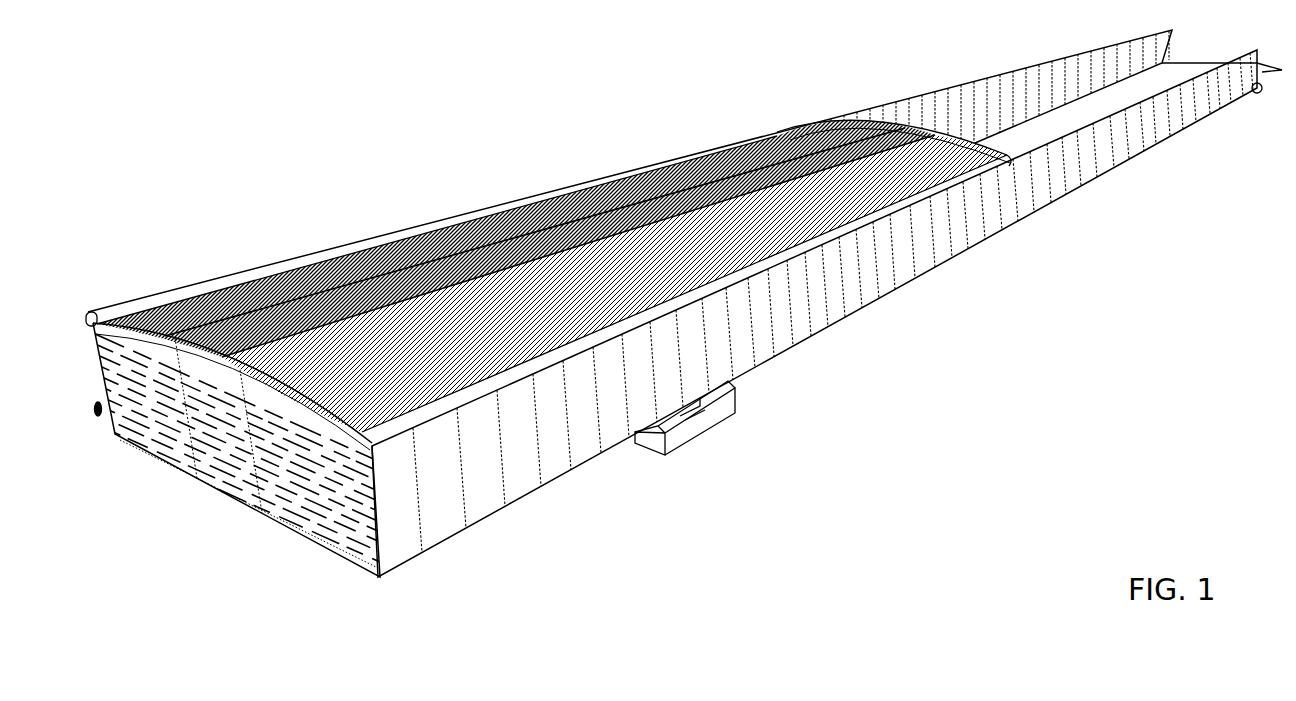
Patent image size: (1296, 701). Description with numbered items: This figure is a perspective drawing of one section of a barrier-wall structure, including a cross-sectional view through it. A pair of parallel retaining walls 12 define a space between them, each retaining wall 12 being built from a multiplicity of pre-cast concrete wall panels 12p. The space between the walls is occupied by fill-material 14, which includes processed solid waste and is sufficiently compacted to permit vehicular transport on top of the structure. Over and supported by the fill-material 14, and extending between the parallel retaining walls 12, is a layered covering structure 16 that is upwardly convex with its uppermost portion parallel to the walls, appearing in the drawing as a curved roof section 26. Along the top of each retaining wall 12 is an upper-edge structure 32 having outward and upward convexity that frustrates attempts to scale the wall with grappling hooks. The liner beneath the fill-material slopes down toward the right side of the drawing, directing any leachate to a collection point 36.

The retaining wall 12 is at (498, 472).
The pre-cast concrete wall panel 12p is at (553, 452).
The fill-material 14 is at (281, 410).
The layered covering structure 16 is at (411, 358).
The curved roof section 26 is at (446, 276).
The upper-edge structure 32 is at (212, 283).
The collection point 36 is at (702, 423).